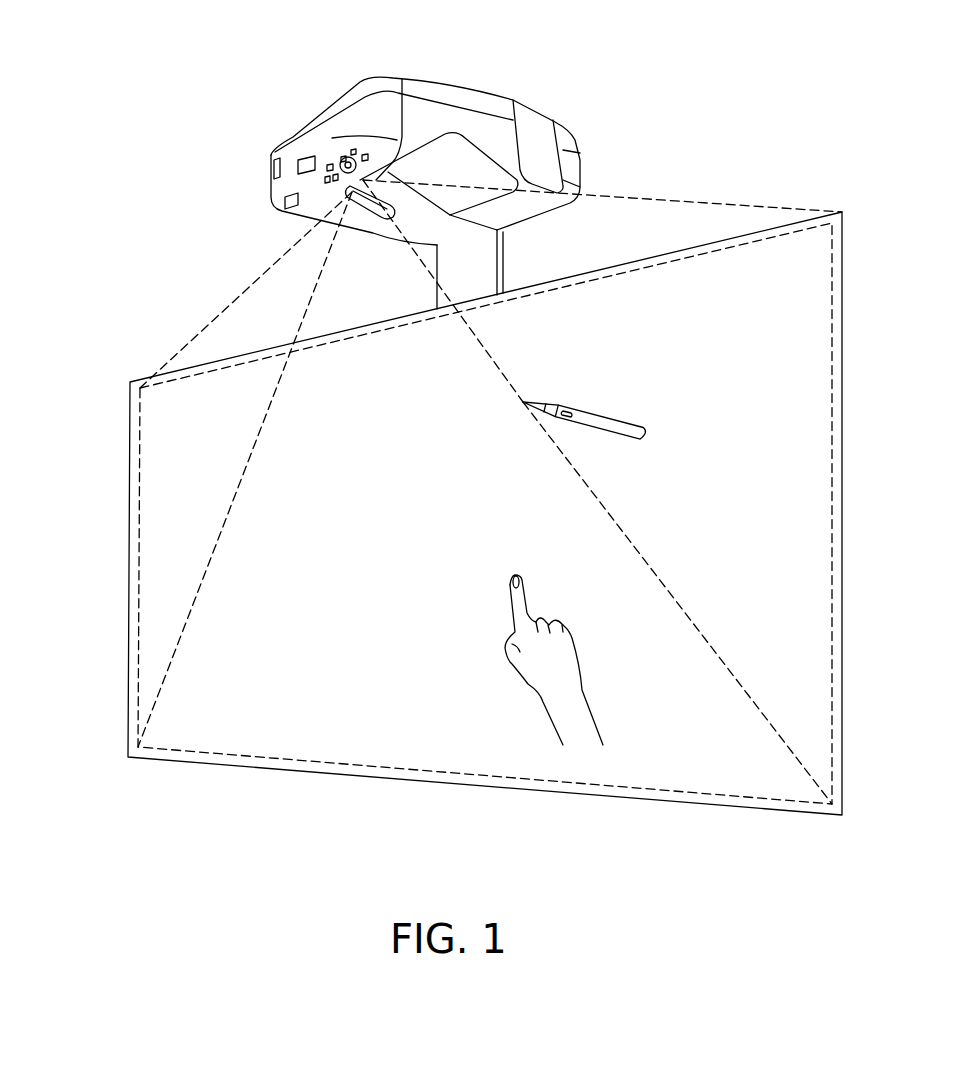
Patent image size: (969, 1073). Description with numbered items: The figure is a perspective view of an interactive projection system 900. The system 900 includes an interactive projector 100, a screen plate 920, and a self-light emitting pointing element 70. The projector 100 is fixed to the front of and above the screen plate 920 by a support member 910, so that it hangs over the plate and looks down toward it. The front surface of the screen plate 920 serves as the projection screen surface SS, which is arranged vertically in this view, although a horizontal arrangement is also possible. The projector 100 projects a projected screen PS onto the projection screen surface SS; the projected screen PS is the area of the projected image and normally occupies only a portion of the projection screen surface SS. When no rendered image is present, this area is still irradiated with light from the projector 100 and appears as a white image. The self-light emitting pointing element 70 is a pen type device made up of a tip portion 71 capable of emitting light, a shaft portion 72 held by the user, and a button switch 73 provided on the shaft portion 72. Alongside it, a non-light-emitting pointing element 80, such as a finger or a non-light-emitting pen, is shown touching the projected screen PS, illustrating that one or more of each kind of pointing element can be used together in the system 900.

The interactive projection system 900 is at (158, 126).
The interactive projector 100 is at (456, 78).
The support member 910 is at (503, 262).
The screen plate 920 is at (826, 212).
The projected screen PS is at (130, 442).
The projection screen surface SS is at (130, 574).
The self-light emitting pointing element 70 is at (598, 416).
The tip portion 71 is at (526, 400).
The shaft portion 72 is at (621, 437).
The button switch 73 is at (560, 418).
The non-light-emitting pointing element 80 is at (518, 603).